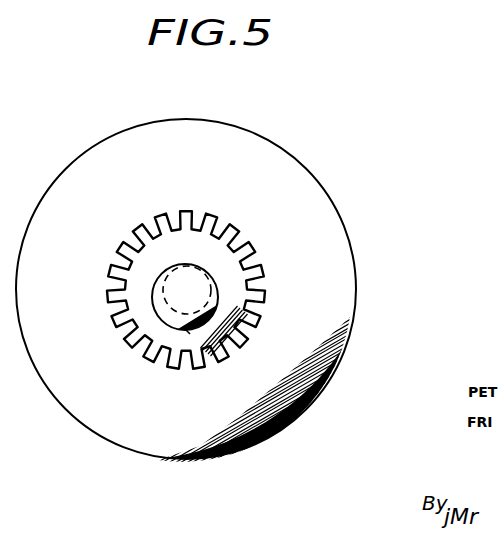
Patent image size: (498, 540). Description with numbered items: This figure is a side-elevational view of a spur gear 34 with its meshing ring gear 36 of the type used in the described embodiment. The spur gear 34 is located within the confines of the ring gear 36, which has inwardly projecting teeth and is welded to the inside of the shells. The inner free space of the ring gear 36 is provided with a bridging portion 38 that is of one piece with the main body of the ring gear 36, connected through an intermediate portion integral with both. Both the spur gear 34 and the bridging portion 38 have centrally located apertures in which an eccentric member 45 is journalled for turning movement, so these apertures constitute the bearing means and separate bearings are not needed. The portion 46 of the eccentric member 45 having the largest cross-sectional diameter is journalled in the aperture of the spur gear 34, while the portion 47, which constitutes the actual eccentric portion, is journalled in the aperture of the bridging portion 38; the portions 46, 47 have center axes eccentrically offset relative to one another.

The spur gear 34 is at (150, 322).
The ring gear 36 is at (322, 222).
The bridging portion 38 is at (184, 212).
The eccentric member 45 is at (152, 289).
The portion of the eccentric member 46 is at (188, 332).
The eccentric portion 47 is at (203, 281).